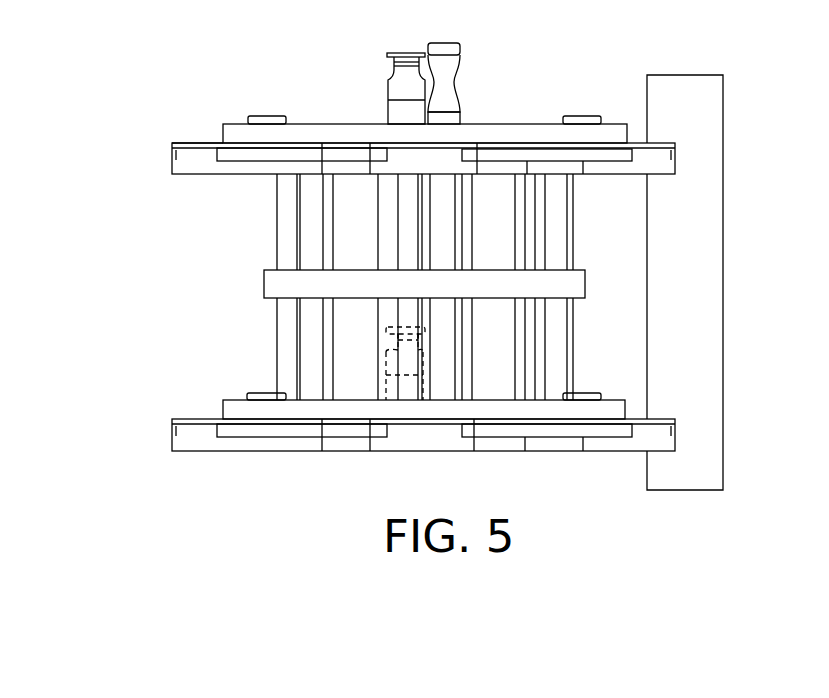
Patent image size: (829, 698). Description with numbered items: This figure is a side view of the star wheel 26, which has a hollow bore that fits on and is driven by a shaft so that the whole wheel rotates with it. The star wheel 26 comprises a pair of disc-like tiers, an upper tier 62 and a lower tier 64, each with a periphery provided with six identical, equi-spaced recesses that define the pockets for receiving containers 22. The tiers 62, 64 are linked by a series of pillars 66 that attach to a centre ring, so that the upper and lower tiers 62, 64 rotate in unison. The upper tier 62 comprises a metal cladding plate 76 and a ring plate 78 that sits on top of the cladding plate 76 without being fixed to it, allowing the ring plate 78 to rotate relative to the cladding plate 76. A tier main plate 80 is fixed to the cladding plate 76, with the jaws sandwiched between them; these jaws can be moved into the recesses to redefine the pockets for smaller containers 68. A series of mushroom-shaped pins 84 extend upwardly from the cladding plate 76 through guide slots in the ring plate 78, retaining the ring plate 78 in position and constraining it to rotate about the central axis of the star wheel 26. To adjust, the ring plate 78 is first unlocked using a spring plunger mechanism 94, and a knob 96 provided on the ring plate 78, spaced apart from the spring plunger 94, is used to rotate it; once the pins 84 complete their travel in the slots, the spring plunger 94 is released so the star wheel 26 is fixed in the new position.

The container 22 is at (697, 297).
The star wheel 26 is at (195, 62).
The upper tier 62 is at (152, 157).
The lower tier 64 is at (152, 437).
The pillar 66 is at (283, 226).
The smaller container 68 is at (268, 284).
The cladding plate 76 is at (190, 143).
The ring plate 78 is at (322, 124).
The tier main plate 80 is at (190, 175).
The mushroom-shaped pin 84 is at (578, 117).
The spring plunger mechanism 94 is at (396, 88).
The knob 96 is at (450, 86).